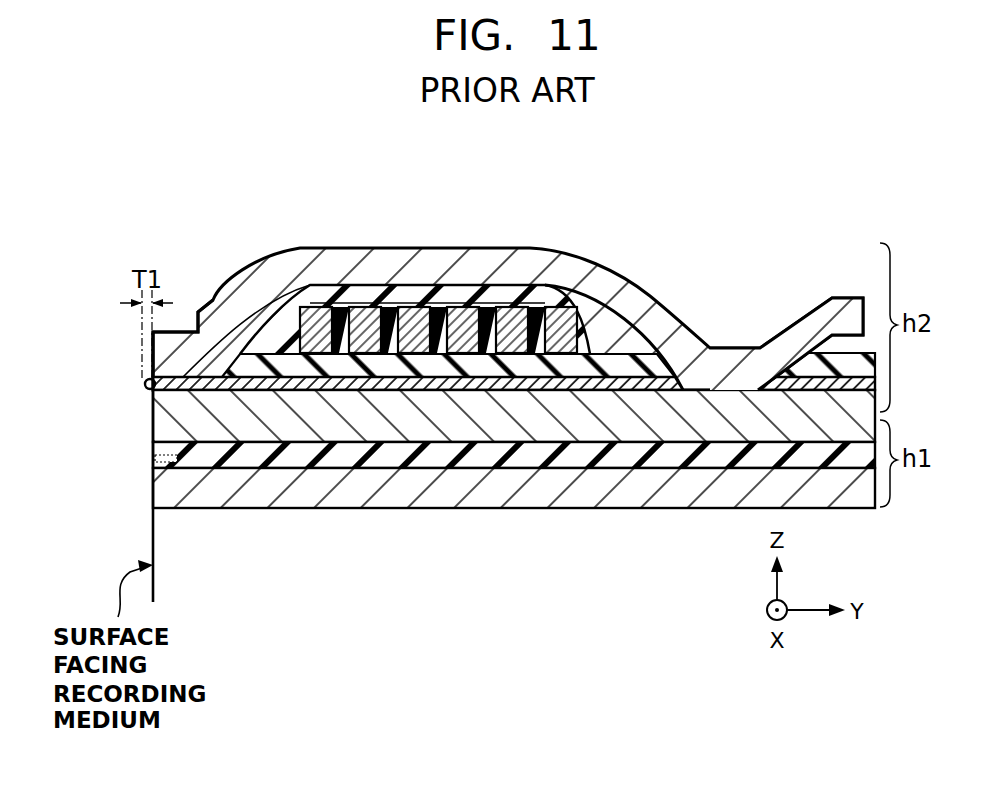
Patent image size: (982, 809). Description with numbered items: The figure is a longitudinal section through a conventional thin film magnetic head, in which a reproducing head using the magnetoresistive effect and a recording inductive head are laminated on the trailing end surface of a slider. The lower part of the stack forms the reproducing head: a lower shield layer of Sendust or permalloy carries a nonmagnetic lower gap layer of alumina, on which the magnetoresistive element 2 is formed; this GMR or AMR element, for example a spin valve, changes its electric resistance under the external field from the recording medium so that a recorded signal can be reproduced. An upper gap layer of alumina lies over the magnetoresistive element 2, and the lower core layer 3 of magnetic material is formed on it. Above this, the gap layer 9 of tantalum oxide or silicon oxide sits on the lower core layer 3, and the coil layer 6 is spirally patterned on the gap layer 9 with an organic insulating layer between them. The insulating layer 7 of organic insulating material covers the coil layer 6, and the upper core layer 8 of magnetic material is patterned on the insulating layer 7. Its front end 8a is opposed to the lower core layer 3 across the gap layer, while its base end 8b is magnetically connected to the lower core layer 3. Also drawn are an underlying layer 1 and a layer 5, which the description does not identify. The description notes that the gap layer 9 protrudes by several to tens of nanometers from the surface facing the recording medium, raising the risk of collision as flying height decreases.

The substrate 1 is at (642, 487).
The magnetoresistive element 2 is at (153, 464).
The lower core layer 3 is at (163, 422).
The lower core layer 5 is at (447, 364).
The coil layer 6 is at (410, 300).
The insulating layer 7 is at (276, 340).
The upper core layer 8 is at (509, 258).
The front end 8a is at (173, 357).
The base end 8b is at (742, 368).
The gap layer 9 is at (365, 381).